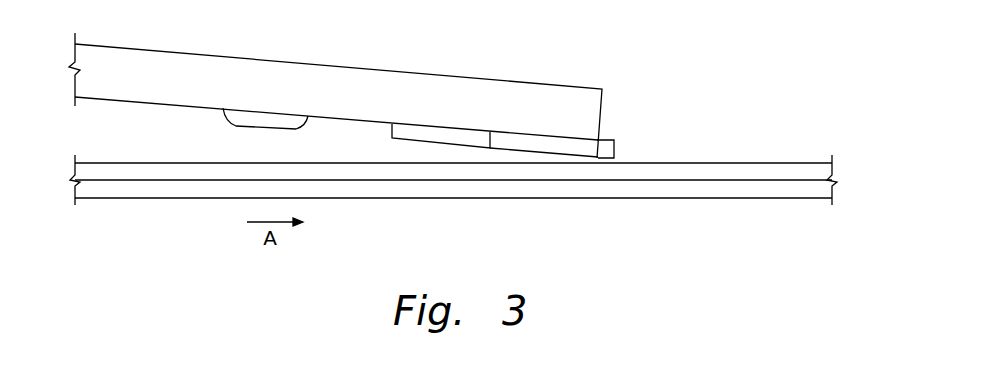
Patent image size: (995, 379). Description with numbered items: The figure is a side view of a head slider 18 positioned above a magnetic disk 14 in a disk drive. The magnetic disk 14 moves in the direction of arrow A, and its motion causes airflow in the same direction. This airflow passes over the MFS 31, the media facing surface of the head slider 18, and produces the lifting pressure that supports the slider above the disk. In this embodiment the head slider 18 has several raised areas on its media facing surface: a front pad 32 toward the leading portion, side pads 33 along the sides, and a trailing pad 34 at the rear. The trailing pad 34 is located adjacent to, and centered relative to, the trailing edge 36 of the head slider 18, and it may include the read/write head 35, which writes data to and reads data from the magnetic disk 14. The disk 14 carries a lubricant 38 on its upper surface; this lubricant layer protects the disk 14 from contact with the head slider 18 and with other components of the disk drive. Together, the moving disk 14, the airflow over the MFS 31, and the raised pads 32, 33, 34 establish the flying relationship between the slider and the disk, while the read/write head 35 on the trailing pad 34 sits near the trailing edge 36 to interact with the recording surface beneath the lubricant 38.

The magnetic disk 14 is at (148, 198).
The head slider 18 is at (293, 67).
The MFS 31 is at (363, 135).
The front pad 32 is at (232, 122).
The side pads 33 is at (392, 132).
The trailing pad 34 is at (540, 145).
The read/write head 35 is at (614, 143).
The trailing edge 36 is at (618, 95).
The lubricant 38 is at (776, 162).